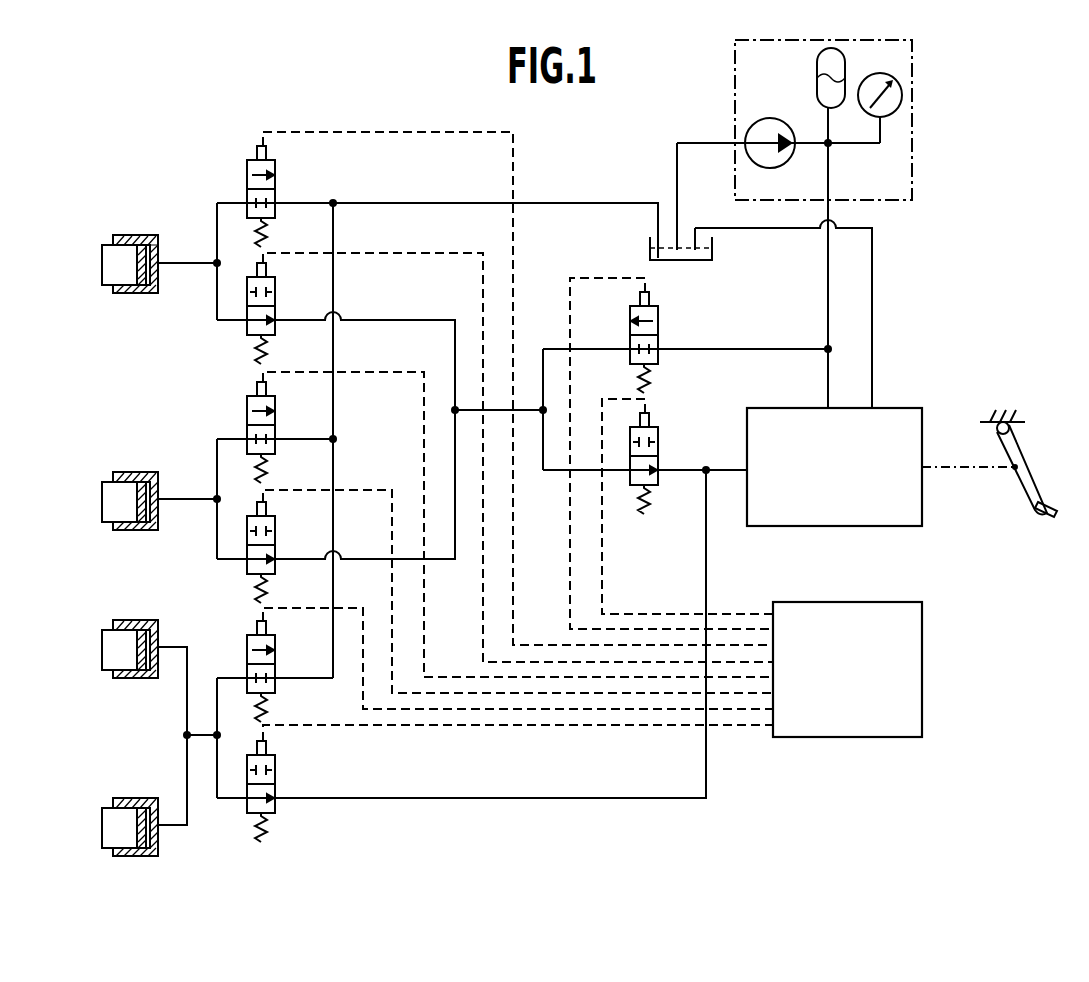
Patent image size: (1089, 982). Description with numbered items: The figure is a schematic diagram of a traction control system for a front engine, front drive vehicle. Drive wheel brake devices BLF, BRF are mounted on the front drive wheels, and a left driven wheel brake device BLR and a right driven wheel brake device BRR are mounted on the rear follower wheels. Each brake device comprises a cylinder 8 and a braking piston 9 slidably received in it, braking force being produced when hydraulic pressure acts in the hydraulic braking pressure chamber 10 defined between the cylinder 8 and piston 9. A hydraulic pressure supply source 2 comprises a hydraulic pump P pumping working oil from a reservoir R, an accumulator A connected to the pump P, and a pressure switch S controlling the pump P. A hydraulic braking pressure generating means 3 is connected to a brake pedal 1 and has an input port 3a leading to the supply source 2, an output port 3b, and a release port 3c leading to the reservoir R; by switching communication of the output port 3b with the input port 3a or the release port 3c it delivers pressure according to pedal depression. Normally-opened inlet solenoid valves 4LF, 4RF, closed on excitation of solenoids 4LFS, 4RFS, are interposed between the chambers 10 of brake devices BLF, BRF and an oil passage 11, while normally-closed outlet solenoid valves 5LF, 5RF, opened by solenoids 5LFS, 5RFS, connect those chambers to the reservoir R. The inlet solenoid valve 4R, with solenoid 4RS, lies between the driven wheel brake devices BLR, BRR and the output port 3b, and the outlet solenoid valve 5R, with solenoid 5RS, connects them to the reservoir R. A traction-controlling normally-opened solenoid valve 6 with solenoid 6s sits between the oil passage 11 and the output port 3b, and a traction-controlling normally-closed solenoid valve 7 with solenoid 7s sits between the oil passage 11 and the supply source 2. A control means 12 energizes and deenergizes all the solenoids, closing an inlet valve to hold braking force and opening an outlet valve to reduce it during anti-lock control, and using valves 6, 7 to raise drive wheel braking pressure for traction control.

The brake pedal 1 is at (1050, 516).
The hydraulic pressure supply source 2 is at (915, 118).
The hydraulic braking pressure generating means 3 is at (842, 486).
The input port 3a is at (828, 406).
The output port 3b is at (747, 470).
The release port 3c is at (872, 402).
The inlet solenoid valve 4LF is at (247, 337).
The solenoid 4LFS is at (266, 270).
The inlet solenoid valve 4RF is at (247, 577).
The solenoid 4RFS is at (267, 505).
The inlet solenoid valve 4R is at (275, 815).
The solenoid 4RS is at (268, 746).
The outlet solenoid valve 5LF is at (247, 178).
The solenoid 5LFS is at (268, 150).
The outlet solenoid valve 5RF is at (247, 420).
The solenoid 5RFS is at (268, 385).
The outlet solenoid valve 5R is at (275, 690).
The solenoid 5RS is at (268, 626).
The traction-controlling normally-opened solenoid valve 6 is at (660, 485).
The solenoid 6s is at (650, 418).
The traction-controlling normally-closed solenoid valve 7 is at (660, 330).
The solenoid 7s is at (640, 300).
The cylinder 8 is at (137, 240).
The braking piston 9 is at (106, 283).
The hydraulic braking pressure chamber 10 is at (156, 256).
The oil passage 11 is at (455, 351).
The control means 12 is at (862, 684).
The accumulator A is at (845, 69).
The hydraulic pump P is at (770, 118).
The pressure switch S is at (890, 118).
The reservoir R is at (650, 252).
The drive wheel brake device BLF is at (116, 240).
The drive wheel brake device BRF is at (116, 470).
The left driven wheel brake device BLR is at (112, 622).
The right driven wheel brake device BRR is at (112, 812).